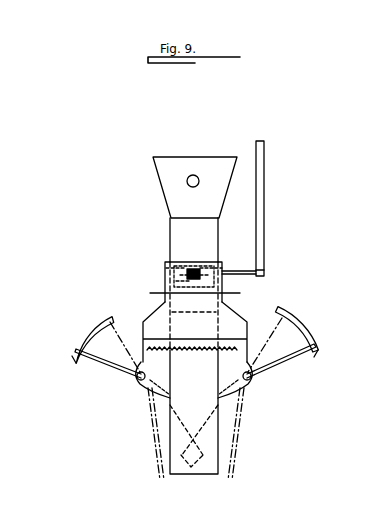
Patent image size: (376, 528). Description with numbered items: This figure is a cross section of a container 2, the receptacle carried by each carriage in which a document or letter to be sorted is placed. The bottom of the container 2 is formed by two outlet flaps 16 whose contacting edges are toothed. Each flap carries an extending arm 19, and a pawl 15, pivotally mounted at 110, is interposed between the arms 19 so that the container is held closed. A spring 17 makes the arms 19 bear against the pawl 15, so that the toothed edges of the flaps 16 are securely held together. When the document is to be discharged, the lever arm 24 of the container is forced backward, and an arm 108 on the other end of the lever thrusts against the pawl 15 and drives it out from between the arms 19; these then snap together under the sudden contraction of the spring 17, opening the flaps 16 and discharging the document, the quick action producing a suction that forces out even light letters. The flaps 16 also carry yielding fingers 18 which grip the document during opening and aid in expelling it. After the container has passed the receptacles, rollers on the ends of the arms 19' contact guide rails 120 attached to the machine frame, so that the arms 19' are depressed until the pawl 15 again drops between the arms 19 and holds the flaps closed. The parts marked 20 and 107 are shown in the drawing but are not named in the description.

The container 2 is at (165, 185).
The pawl 15 is at (165, 288).
The outlet flaps 16 is at (191, 474).
The spring 17 is at (182, 350).
The yielding fingers 18 is at (152, 393).
The arms 19 is at (199, 323).
The arms 19' is at (194, 352).
The gripper tip 20 is at (72, 353).
The lever arm 24 is at (262, 190).
The link 107 is at (170, 272).
The arm 108 is at (192, 268).
The pivot 110 is at (222, 305).
The guide rails 120 is at (96, 322).